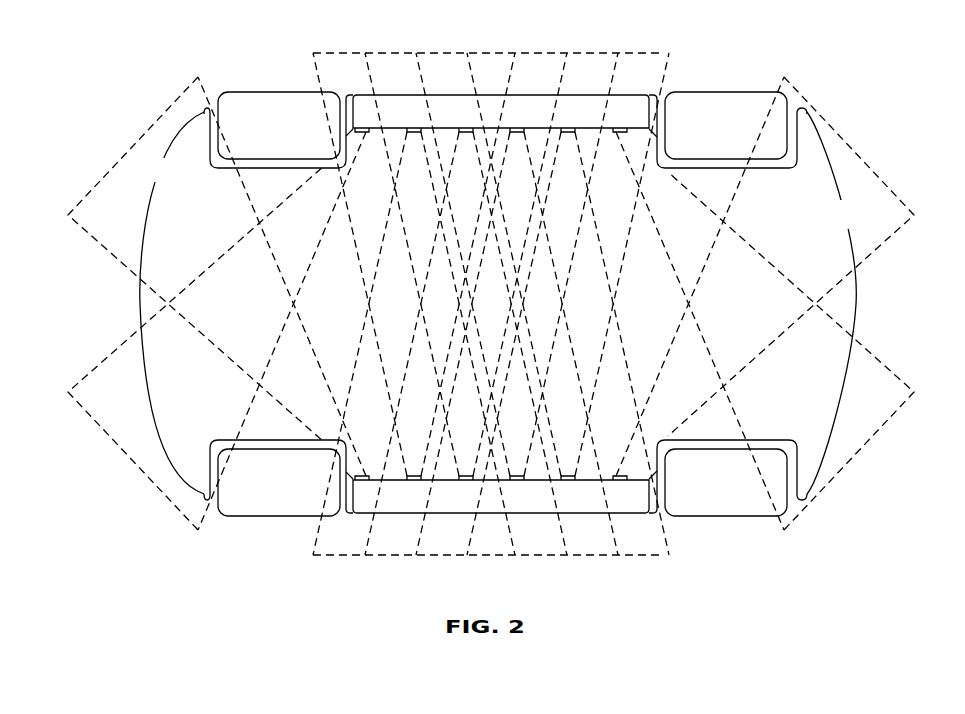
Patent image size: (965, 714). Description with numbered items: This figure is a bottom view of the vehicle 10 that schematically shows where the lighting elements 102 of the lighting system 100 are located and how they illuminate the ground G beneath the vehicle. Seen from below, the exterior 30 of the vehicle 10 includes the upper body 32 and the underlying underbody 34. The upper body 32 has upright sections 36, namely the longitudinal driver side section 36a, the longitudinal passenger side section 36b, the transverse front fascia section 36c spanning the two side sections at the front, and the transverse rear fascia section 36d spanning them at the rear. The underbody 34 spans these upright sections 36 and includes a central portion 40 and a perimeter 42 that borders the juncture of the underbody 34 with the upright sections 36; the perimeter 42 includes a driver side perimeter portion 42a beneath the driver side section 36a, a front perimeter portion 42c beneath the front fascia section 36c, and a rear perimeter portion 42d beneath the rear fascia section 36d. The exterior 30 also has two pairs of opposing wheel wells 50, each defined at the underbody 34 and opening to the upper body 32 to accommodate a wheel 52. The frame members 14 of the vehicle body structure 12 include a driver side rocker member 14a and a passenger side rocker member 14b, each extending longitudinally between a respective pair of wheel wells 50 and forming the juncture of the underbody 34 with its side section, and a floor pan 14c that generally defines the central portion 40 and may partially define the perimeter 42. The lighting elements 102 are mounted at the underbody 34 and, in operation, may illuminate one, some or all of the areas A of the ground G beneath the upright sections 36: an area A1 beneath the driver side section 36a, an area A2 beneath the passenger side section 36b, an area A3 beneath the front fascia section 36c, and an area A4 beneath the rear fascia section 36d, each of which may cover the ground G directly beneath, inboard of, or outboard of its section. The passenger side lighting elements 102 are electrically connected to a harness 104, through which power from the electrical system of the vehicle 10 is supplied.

The vehicle 10 is at (836, 153).
The vehicle body structure 12 is at (688, 601).
The frame members 14 is at (561, 318).
The driver side rocker member 14a is at (514, 74).
The passenger side rocker member 14b is at (618, 515).
The floor pan 14c is at (605, 17).
The exterior 30 is at (858, 253).
The upper body 32 is at (858, 277).
The underbody 34 is at (856, 298).
The upright sections 36 is at (507, 318).
The driver side section 36a is at (647, 95).
The passenger side section 36b is at (639, 516).
The front fascia section 36c is at (857, 323).
The rear fascia section 36d is at (141, 300).
The central portion 40 is at (494, 306).
The perimeter 42 is at (491, 303).
The driver side perimeter portion 42a is at (528, 173).
The front perimeter portion 42c is at (830, 311).
The rear perimeter portion 42d is at (253, 313).
The wheel wells 50 is at (798, 125).
The wheel 52 is at (742, 108).
The lighting system 100 is at (463, 487).
The lighting elements 102 is at (538, 516).
The harness 104 is at (646, 493).
The areas A is at (507, 318).
The area beneath the driver side section A1 is at (400, 106).
The area beneath the passenger side section A2 is at (413, 526).
The area beneath the front fascia section A3 is at (868, 226).
The area beneath the rear fascia section A4 is at (178, 178).
The ground G is at (919, 541).